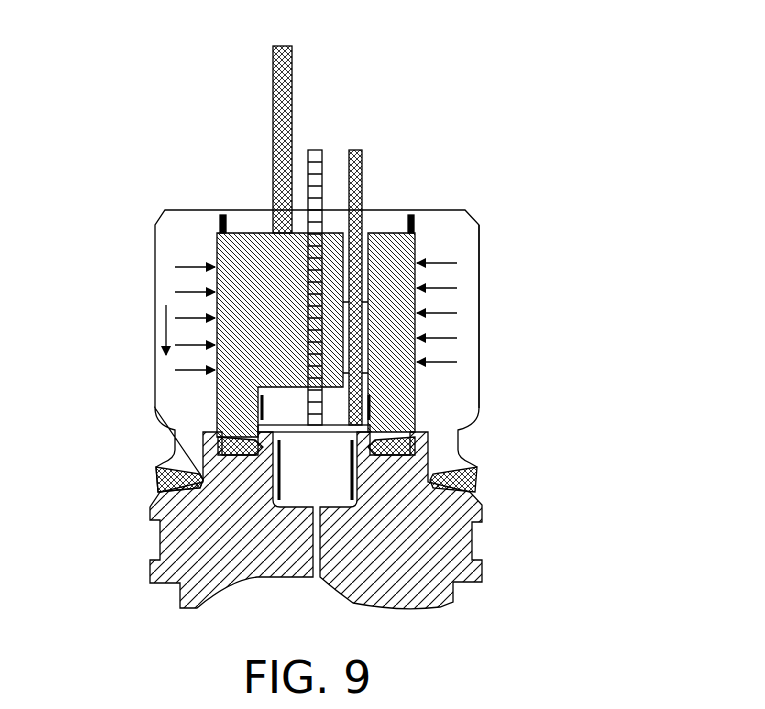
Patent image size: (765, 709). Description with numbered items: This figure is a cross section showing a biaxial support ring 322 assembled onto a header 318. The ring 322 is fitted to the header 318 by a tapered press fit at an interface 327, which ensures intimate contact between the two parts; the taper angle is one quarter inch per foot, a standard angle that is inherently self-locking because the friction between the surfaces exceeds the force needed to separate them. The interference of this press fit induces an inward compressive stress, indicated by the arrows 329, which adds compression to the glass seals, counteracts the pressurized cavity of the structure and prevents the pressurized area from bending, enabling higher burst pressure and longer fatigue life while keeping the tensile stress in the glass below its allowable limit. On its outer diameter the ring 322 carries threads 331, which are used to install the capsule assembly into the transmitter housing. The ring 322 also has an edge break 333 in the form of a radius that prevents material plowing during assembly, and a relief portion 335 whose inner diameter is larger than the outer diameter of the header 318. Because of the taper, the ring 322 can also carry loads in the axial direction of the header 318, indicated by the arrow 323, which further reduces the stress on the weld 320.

The header 318 is at (235, 233).
The weld 320 is at (220, 445).
The biaxial support ring 322 is at (482, 295).
The arrow indicating axial load 323 is at (165, 330).
The interface 327 is at (417, 240).
The arrows indicating compression 329 is at (205, 266).
The threads 331 is at (480, 360).
The edge break 333 is at (440, 437).
The relief portion 335 is at (450, 462).